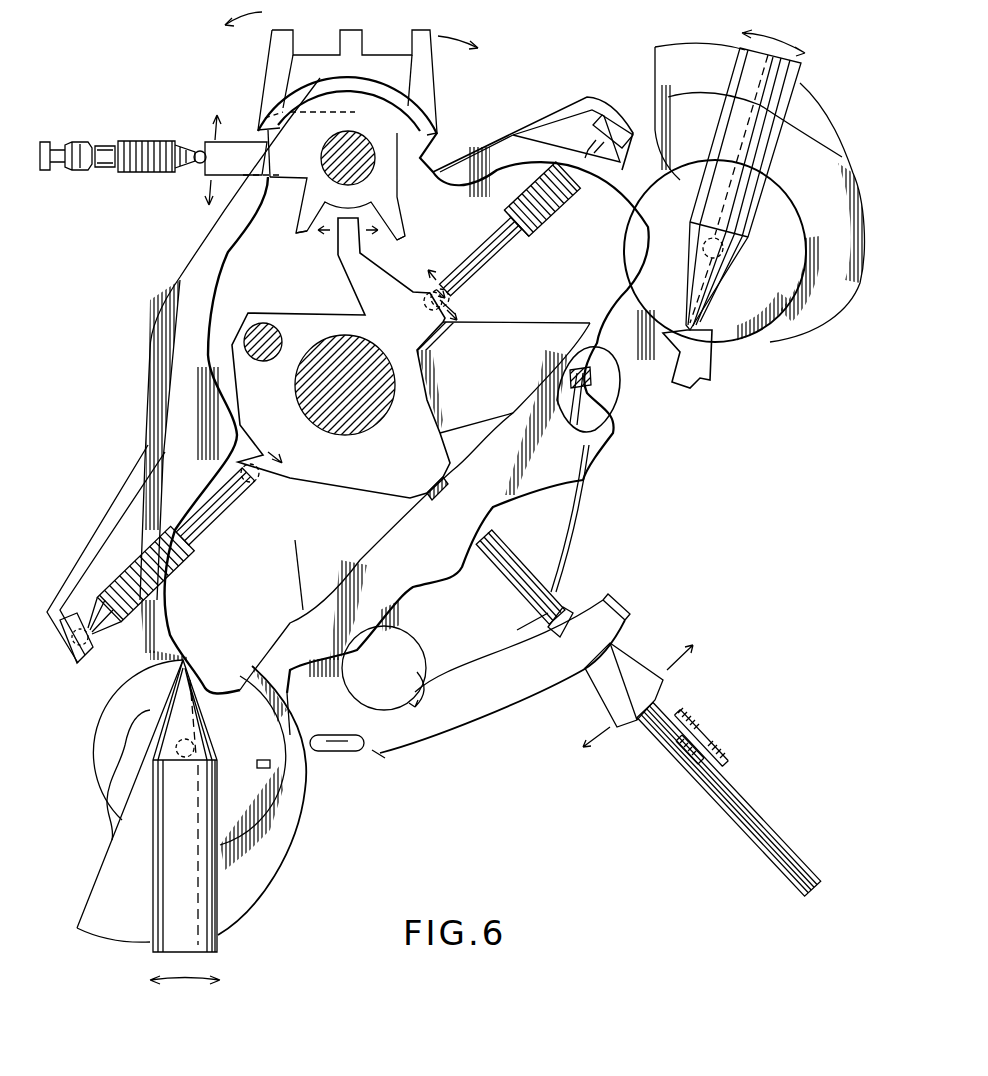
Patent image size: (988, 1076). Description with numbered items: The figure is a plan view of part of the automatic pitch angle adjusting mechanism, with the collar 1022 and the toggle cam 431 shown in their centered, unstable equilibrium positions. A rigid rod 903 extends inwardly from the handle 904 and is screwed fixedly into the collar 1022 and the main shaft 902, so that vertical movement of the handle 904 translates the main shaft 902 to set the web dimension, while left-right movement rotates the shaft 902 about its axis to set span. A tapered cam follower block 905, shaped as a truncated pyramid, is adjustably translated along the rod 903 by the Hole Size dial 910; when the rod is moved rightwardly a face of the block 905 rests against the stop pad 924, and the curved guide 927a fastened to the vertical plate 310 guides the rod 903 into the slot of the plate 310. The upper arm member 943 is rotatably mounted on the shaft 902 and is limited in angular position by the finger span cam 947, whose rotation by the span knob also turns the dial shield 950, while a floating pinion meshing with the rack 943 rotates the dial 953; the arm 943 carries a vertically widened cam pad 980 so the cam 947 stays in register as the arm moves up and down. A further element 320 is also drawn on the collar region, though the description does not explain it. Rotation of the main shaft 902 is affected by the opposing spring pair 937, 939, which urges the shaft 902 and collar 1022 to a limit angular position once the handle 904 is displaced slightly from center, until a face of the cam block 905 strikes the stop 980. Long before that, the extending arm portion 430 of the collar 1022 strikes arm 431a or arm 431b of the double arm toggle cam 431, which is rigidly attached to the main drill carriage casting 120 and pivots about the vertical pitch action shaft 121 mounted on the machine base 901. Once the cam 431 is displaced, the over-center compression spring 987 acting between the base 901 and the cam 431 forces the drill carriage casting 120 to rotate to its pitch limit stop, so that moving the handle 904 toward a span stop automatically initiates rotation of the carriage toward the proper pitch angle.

The main drill carriage casting 120 is at (405, 95).
The machine base 901 is at (238, 150).
The over-center compression spring 987 is at (160, 173).
The double arm toggle cam 431 is at (364, 132).
The vertical pitch action shaft 121 is at (366, 169).
The extending arm portion 430 is at (362, 275).
The arm of toggle cam 431a is at (300, 238).
The arm of toggle cam 431b is at (405, 238).
The collar 1022 is at (420, 458).
The pin 320 is at (244, 320).
The main shaft 902 is at (365, 394).
The spring means 939 is at (541, 232).
The vertical plate 310 is at (610, 343).
The spring means 937 is at (758, 190).
The stop pad 924 is at (700, 385).
The lower curved guide 927a is at (590, 518).
The rigid rod 903 is at (540, 578).
The tapered cam follower block 905 is at (630, 667).
The Hole Size dial 910 is at (697, 727).
The handle 904 is at (735, 825).
The upper arm member 943 is at (430, 672).
The cam pad 980 is at (338, 750).
The dial shield 950 is at (254, 751).
The upper finger span cam 947 is at (138, 911).
The dial 953 is at (222, 933).